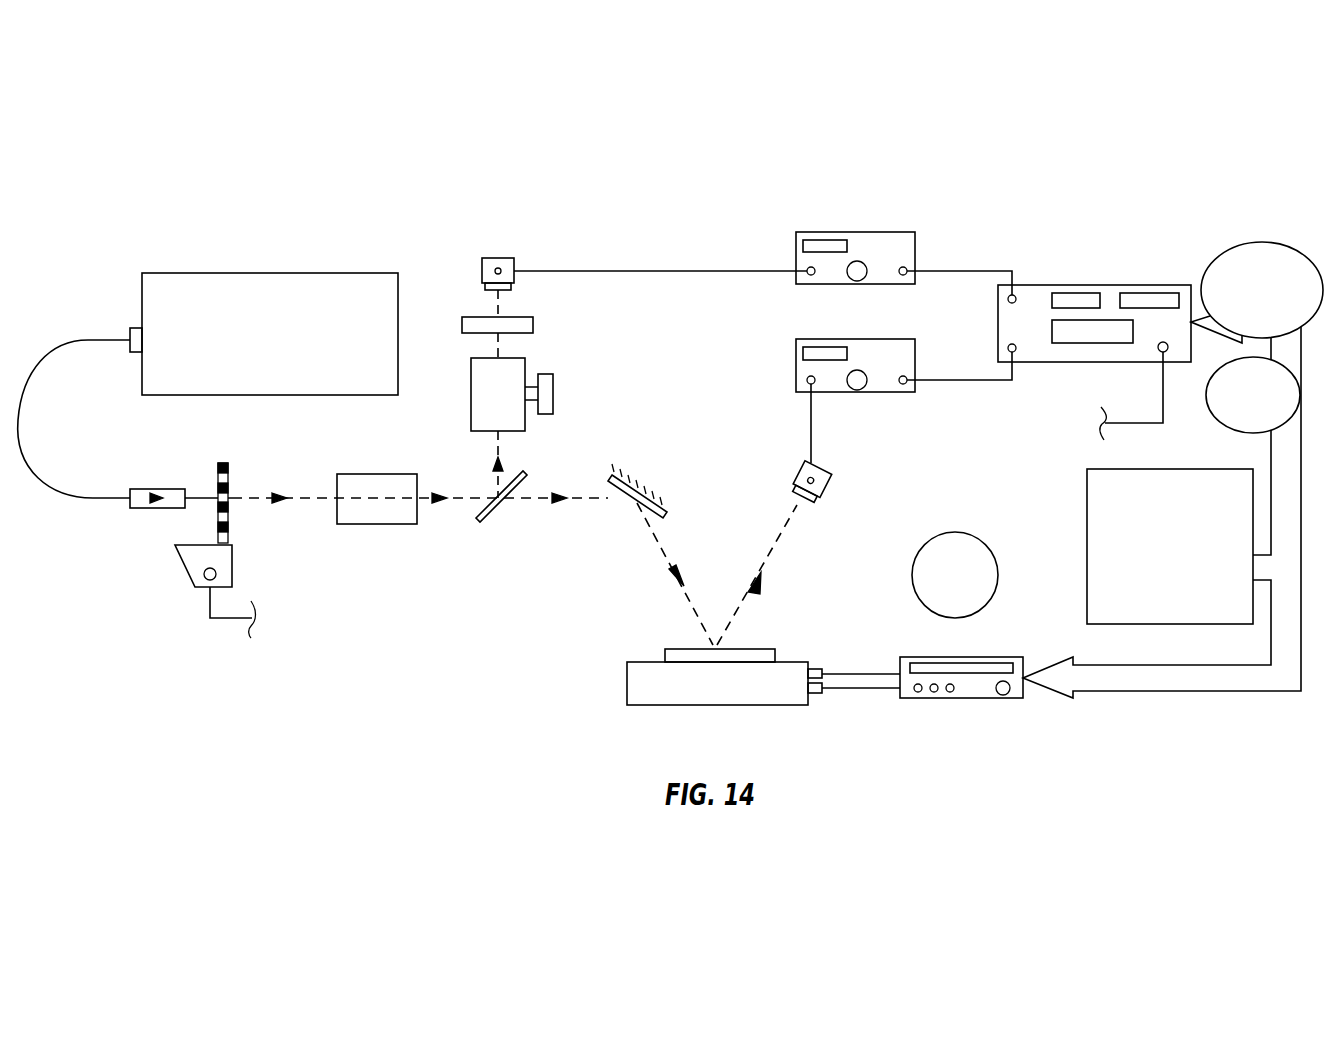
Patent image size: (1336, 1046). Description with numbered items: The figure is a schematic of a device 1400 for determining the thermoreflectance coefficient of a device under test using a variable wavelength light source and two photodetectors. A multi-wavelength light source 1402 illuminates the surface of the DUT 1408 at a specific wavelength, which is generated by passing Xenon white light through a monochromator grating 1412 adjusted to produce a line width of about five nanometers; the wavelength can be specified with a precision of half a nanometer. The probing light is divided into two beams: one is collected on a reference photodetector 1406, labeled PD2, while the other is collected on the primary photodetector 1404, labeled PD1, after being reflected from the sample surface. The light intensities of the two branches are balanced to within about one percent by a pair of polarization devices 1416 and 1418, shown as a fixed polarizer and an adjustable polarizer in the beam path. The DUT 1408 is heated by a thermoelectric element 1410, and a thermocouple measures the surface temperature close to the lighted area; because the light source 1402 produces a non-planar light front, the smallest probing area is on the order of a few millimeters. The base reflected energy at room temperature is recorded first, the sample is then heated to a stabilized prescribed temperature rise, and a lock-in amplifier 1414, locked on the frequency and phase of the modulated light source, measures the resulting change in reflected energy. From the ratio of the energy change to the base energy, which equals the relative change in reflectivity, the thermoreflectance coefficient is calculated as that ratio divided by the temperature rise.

The device 1400 is at (260, 156).
The multi-wavelength light source 1402 is at (262, 272).
The primary photodetector 1404 is at (514, 263).
The reference photodetector 1406 is at (828, 477).
The DUT 1408 is at (750, 649).
The thermoelectric element 1410 is at (960, 699).
The monochromator grating 1412 is at (232, 569).
The lock-in amplifier 1414 is at (1178, 285).
The polarization device 1416 is at (368, 474).
The polarization device 1418 is at (471, 398).